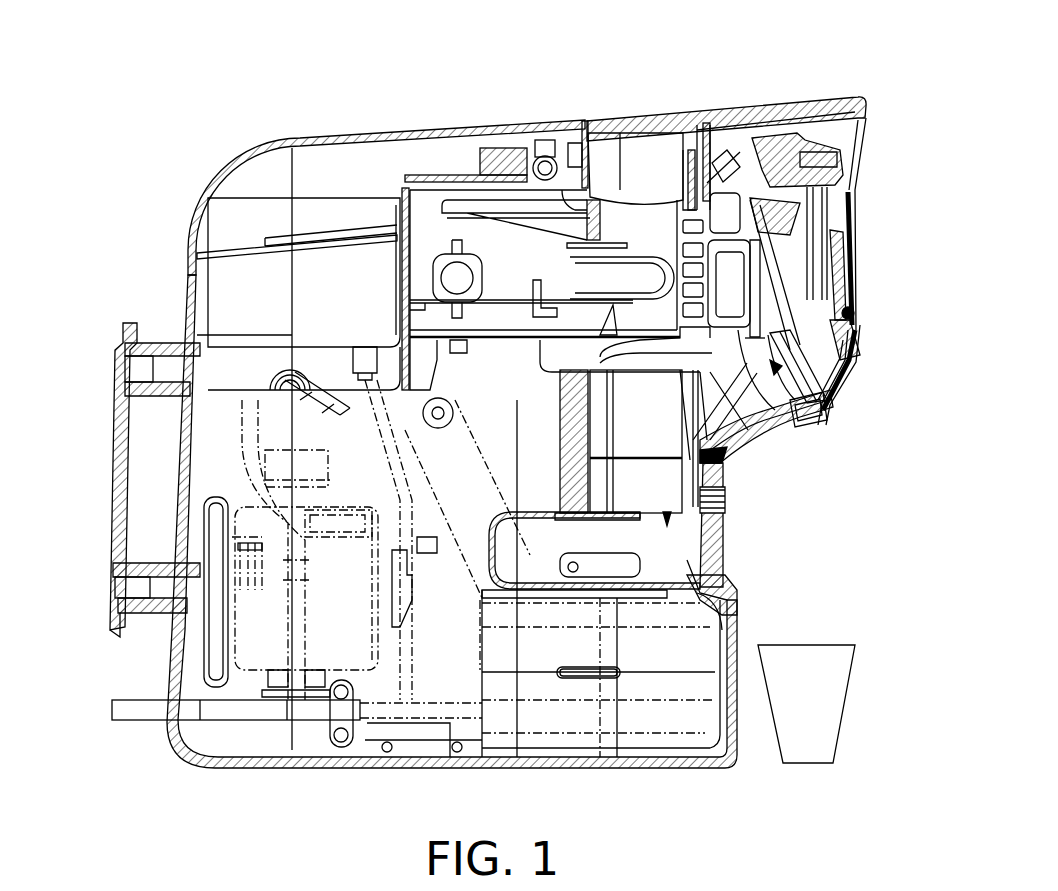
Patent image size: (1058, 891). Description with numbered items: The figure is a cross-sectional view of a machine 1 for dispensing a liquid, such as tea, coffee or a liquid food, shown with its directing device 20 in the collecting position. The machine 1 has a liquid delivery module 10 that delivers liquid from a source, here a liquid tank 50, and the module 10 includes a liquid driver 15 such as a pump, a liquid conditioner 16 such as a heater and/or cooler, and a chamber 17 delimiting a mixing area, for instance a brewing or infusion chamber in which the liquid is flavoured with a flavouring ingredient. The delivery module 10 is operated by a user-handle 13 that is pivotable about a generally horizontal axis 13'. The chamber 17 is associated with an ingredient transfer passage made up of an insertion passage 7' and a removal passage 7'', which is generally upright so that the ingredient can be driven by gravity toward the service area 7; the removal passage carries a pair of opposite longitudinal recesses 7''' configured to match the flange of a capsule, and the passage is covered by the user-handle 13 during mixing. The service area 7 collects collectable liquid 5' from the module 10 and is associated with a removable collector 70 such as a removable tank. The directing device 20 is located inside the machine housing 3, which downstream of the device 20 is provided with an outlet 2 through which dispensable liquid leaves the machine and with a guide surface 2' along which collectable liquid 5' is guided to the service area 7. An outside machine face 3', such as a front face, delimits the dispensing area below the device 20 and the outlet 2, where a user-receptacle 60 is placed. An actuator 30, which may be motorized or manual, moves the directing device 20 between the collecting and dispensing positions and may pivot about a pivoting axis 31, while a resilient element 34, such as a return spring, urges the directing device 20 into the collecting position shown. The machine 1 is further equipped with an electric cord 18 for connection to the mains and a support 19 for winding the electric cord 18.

The machine 1 is at (296, 58).
The outlet 2 is at (810, 446).
The guide surface 2' is at (766, 434).
The machine housing 3 is at (837, 409).
The outside machine face 3' is at (890, 367).
The collectable liquid 5' is at (766, 457).
The service area 7 is at (717, 590).
The insertion passage 7' is at (625, 133).
The removal passage 7'' is at (656, 466).
The longitudinal recesses 7''' is at (666, 134).
The liquid delivery module 10 is at (492, 250).
The user-handle 13 is at (724, 181).
The horizontal axis 13' is at (386, 167).
The liquid driver 15 is at (273, 577).
The liquid conditioner 16 is at (565, 723).
The chamber 17 is at (690, 263).
The electric cord 18 is at (112, 712).
The support 19 is at (118, 537).
The directing device 20 is at (807, 377).
The actuator 30 is at (840, 260).
The pivoting axis 31 is at (857, 310).
The resilient element 34 is at (848, 207).
The liquid tank 50 is at (242, 220).
The user-receptacle 60 is at (848, 693).
The removable collector 70 is at (690, 520).